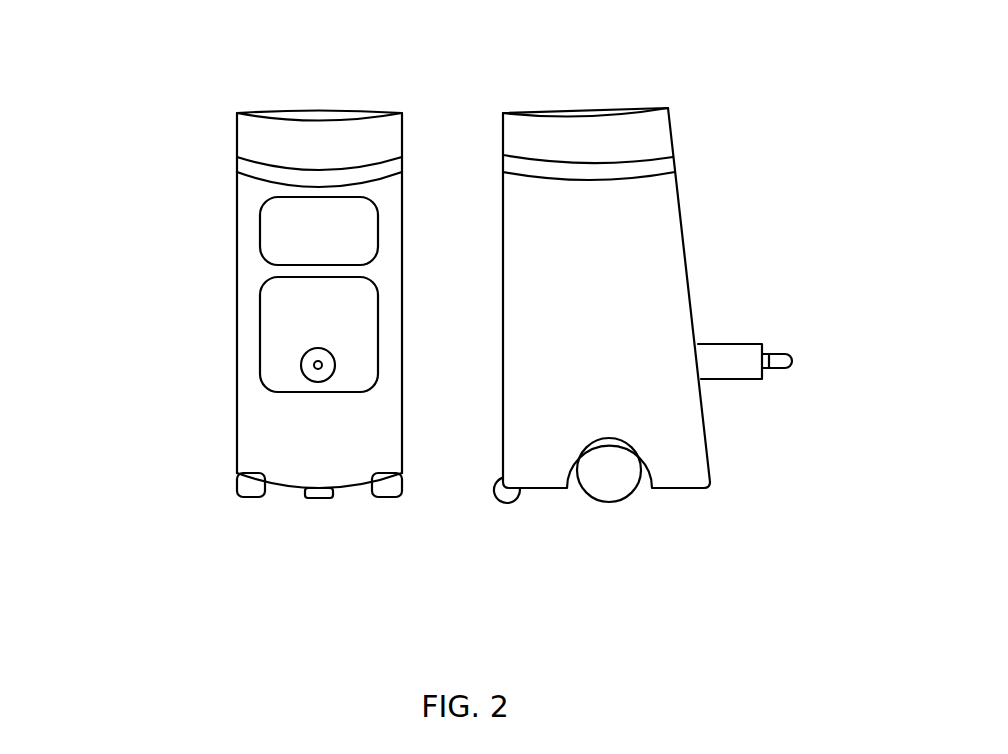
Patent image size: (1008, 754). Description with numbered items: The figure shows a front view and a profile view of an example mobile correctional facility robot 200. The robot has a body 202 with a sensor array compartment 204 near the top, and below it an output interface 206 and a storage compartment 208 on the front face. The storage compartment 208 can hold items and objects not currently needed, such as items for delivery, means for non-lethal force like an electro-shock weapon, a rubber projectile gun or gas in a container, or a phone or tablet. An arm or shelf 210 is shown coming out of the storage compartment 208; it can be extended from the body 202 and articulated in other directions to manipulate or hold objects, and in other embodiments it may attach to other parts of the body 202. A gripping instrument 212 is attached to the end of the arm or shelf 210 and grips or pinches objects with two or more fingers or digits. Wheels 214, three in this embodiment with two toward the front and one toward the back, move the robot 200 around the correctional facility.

The mobile correctional facility robot 200 is at (265, 578).
The body 202 is at (517, 435).
The sensor array compartment 204 is at (553, 170).
The output interface 206 is at (310, 235).
The storage compartment 208 is at (297, 313).
The arm or shelf 210 is at (301, 366).
The gripping instrument 212 is at (316, 370).
The wheels 214 is at (262, 498).